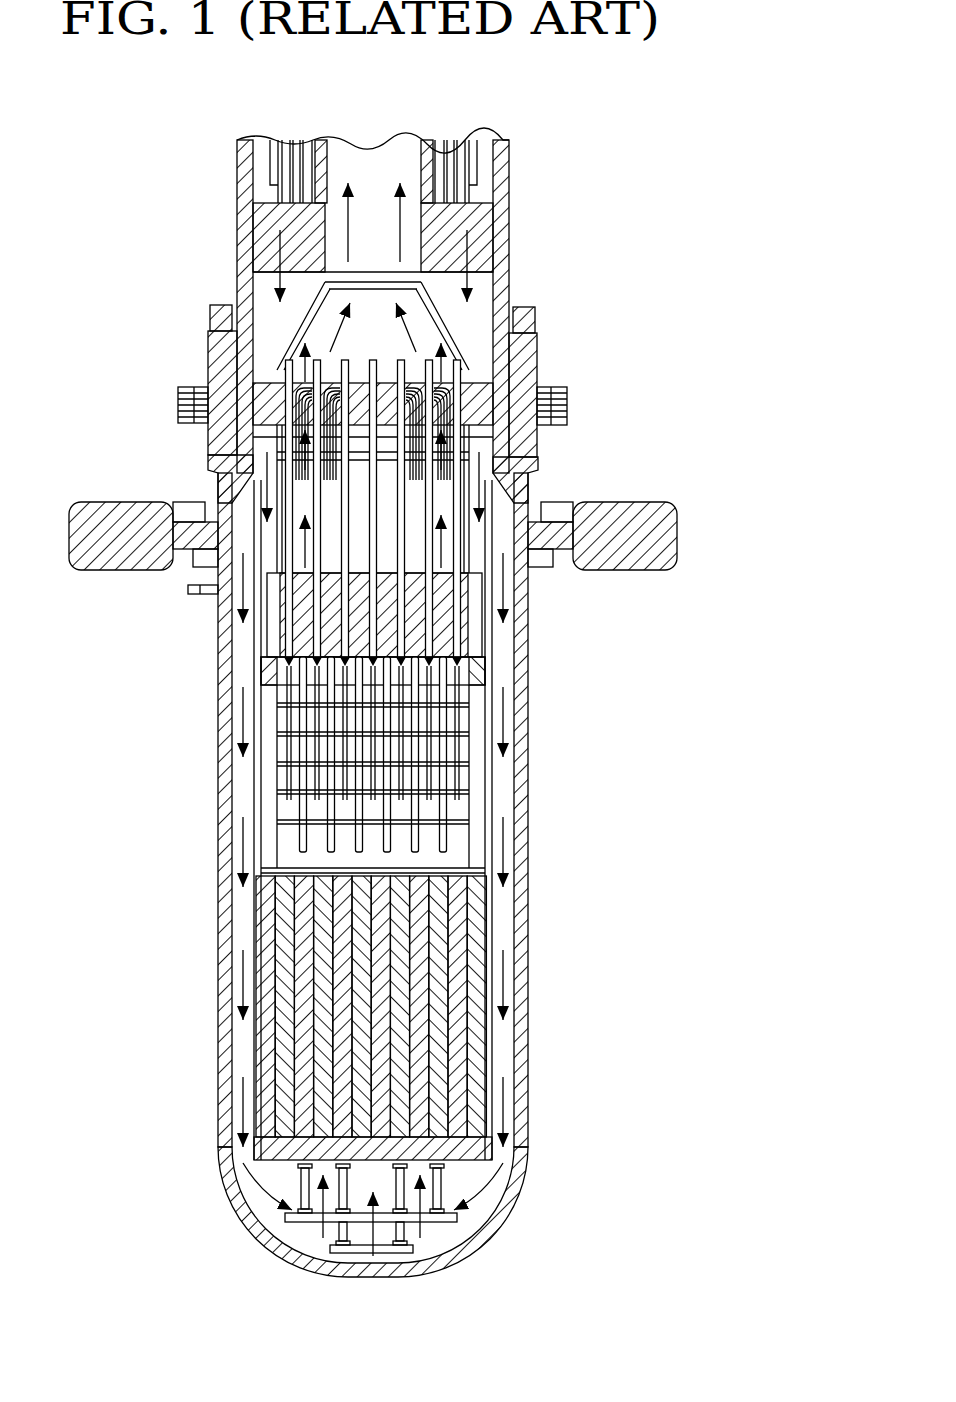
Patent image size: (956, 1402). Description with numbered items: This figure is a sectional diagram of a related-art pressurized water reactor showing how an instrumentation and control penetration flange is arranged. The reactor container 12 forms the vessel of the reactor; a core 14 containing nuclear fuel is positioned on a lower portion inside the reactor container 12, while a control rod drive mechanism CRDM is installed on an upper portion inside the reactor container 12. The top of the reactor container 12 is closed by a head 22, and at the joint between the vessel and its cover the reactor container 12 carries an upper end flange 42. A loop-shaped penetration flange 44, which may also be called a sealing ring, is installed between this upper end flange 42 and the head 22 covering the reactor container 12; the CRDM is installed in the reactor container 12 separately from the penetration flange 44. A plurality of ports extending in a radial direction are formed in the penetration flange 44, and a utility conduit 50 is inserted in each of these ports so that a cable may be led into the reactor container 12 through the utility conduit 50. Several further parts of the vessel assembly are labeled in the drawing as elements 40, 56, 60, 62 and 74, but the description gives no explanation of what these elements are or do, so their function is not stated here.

The reactor container 12 is at (535, 920).
The core 14 is at (374, 1027).
The head 22 is at (510, 192).
The flange 40 is at (537, 372).
The upper end flange 42 is at (540, 470).
The penetration flange 44 is at (210, 385).
The utility conduit 50 is at (568, 402).
The pressurizer region 56 is at (388, 181).
The vessel flange 60 is at (125, 503).
The control rod guide 62 is at (462, 775).
The flange 74 is at (213, 310).
The control rod drive mechanism CRDM is at (280, 628).